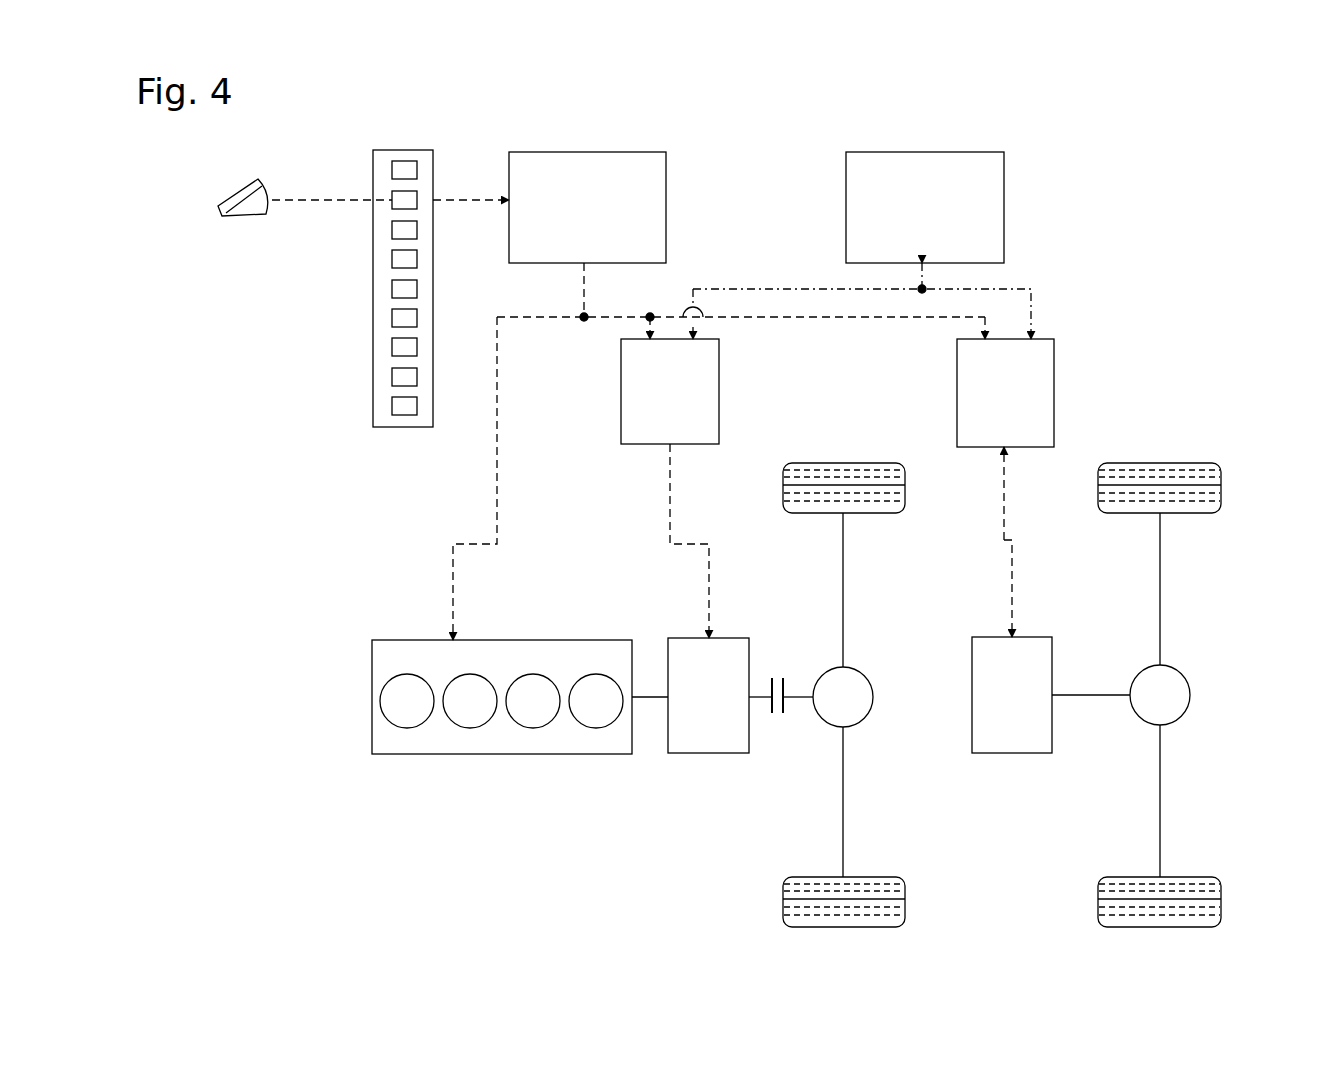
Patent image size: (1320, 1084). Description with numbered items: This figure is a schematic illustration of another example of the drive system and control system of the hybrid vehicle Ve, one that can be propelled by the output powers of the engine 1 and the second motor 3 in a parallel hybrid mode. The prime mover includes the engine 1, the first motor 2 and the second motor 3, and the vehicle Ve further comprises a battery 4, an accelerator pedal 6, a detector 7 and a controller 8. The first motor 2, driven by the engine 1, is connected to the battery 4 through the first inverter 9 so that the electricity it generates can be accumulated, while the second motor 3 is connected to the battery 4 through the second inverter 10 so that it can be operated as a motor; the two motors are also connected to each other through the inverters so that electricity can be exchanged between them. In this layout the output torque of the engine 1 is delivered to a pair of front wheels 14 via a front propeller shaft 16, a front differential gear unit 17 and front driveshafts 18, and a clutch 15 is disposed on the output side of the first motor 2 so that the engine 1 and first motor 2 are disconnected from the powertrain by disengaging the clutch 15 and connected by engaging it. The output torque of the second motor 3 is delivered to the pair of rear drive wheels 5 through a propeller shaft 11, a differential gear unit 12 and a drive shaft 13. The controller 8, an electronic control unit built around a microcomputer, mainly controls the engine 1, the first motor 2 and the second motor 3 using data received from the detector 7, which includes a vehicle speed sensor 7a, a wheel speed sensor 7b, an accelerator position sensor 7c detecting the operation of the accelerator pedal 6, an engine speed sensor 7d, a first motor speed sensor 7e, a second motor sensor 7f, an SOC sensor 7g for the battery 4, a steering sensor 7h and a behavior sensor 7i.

The engine 1 is at (517, 754).
The first motor 2 is at (709, 753).
The second motor 3 is at (1010, 753).
The battery 4 is at (930, 152).
The drive wheels 5 is at (1221, 490).
The accelerator pedal 6 is at (230, 192).
The detector 7 is at (404, 150).
The vehicle speed sensor 7a is at (392, 171).
The wheel speed sensor 7b is at (392, 202).
The accelerator position sensor 7c is at (392, 231).
The engine speed sensor 7d is at (392, 260).
The first motor speed sensor 7e is at (392, 289).
The second motor sensor 7f is at (392, 319).
The SOC sensor 7g is at (392, 347).
The steering sensor 7h is at (392, 377).
The behavior sensor 7i is at (392, 406).
The controller 8 is at (588, 152).
The first inverter 9 is at (621, 400).
The second inverter 10 is at (1054, 393).
The propeller shaft 11 is at (1082, 697).
The differential gear unit 12 is at (1190, 695).
The drive shaft 13 is at (1161, 603).
The front wheels 14 is at (905, 490).
The clutch 15 is at (779, 666).
The front propeller shaft 16 is at (797, 712).
The front differential gear unit 17 is at (873, 697).
The front driveshafts 18 is at (844, 576).
The vehicle Ve is at (1148, 171).